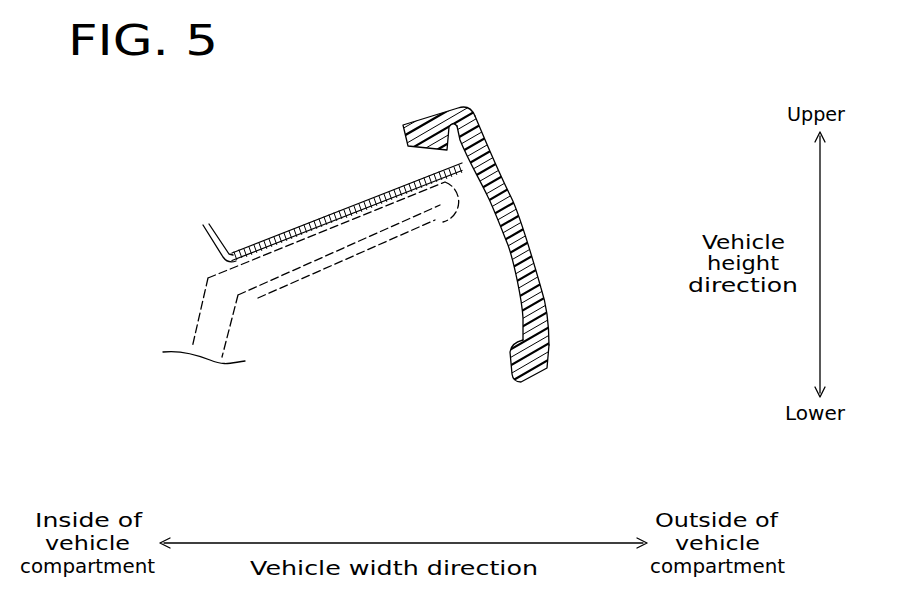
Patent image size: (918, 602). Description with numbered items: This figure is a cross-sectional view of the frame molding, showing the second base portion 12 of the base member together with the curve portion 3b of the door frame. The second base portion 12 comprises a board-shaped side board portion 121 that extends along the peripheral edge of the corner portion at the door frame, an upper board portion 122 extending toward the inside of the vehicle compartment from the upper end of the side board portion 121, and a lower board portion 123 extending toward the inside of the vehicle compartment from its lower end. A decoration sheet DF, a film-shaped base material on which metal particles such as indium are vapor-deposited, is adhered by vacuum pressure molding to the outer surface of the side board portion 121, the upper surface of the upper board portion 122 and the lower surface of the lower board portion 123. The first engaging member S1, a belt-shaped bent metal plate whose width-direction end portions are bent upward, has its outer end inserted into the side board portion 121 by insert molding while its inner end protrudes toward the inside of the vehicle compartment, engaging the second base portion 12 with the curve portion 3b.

The second base portion 12 is at (514, 292).
The side board portion 121 is at (520, 240).
The upper board portion 122 is at (412, 124).
The lower board portion 123 is at (522, 383).
The decoration sheet DF is at (490, 150).
The first engaging member S1 is at (363, 202).
The curve portion 3b is at (353, 262).